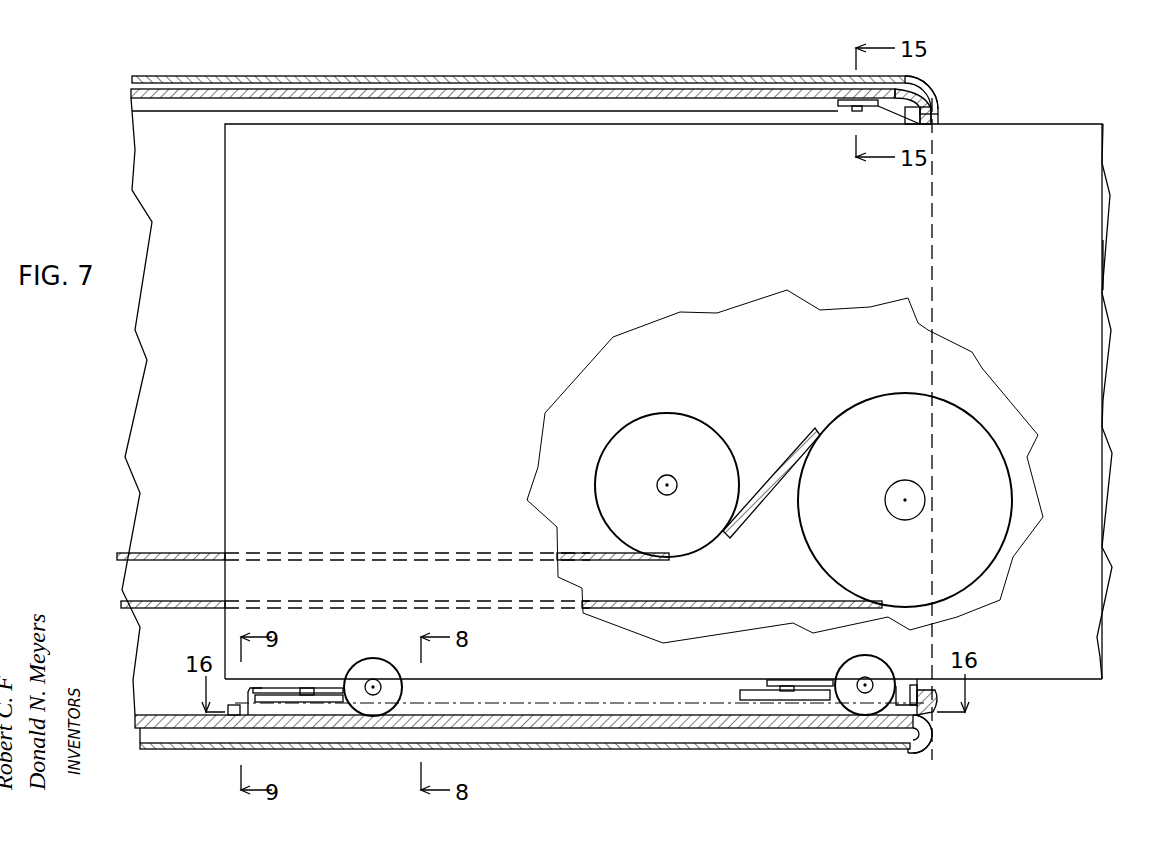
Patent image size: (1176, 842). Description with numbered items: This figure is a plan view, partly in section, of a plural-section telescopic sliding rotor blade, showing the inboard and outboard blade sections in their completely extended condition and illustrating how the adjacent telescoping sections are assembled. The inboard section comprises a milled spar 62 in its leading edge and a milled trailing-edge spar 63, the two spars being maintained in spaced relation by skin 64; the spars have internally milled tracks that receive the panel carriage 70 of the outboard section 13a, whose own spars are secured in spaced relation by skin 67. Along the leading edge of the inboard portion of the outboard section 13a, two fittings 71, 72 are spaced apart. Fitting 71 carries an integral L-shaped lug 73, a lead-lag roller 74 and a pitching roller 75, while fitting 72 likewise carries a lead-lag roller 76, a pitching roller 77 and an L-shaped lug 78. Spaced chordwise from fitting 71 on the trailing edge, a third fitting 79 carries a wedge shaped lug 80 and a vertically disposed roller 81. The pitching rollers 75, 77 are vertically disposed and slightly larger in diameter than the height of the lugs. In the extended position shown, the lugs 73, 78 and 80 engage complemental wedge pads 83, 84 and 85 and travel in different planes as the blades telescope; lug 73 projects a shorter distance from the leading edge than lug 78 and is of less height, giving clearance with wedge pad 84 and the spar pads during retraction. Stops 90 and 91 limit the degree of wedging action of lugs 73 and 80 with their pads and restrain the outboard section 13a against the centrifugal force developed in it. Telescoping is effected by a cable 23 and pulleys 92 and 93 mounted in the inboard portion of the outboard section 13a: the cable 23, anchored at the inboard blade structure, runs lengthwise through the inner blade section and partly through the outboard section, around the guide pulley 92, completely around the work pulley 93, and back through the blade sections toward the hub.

The outboard section 13a is at (1103, 263).
The cable 23 is at (337, 580).
The milled spar 62 is at (538, 728).
The milled trailing-edge spar 63 is at (391, 90).
The skin 64 is at (282, 77).
The skin 67 is at (225, 457).
The panel carriage 70 is at (644, 406).
The fitting 71 is at (815, 678).
The fitting 72 is at (321, 685).
The L-shaped lug 73 is at (936, 718).
The lead-lag roller 74 is at (872, 660).
The pitching roller 75 is at (740, 695).
The lead-lag roller 76 is at (379, 660).
The pitching roller 77 is at (288, 695).
The L-shaped lug 78 is at (236, 715).
The third fitting 79 is at (893, 119).
The wedge shaped lug 80 is at (933, 107).
The vertically disposed roller 81 is at (838, 104).
The wedge pad 83 is at (909, 735).
The wedge pad 84 is at (250, 712).
The wedge pad 85 is at (912, 96).
The stop 90 is at (940, 708).
The stop 91 is at (938, 112).
The guide pulley 92 is at (597, 478).
The work pulley 93 is at (807, 519).